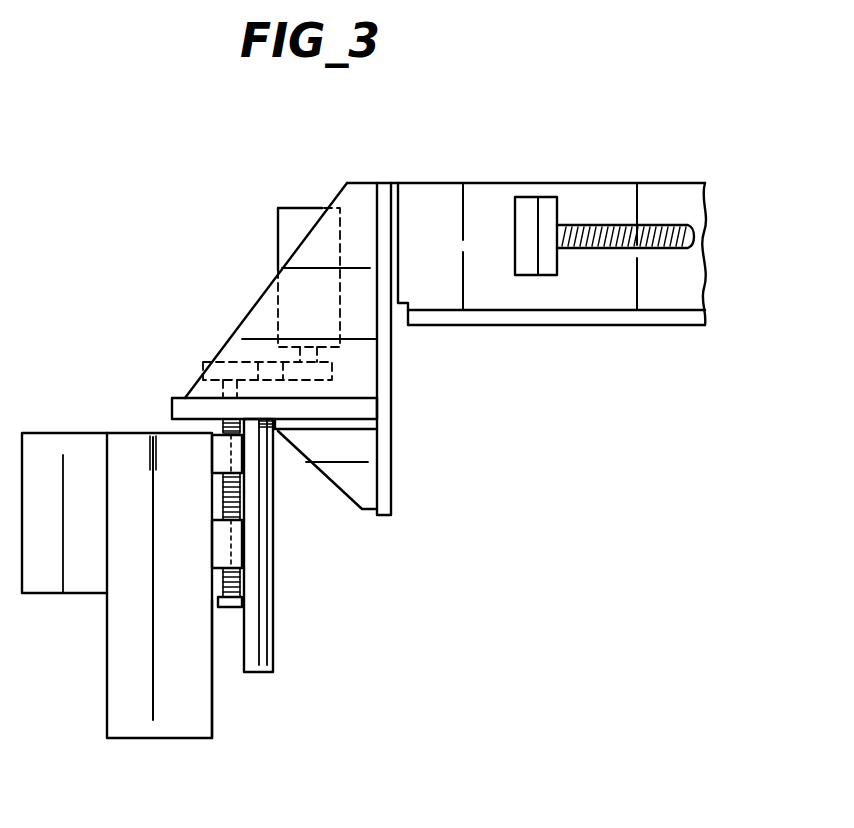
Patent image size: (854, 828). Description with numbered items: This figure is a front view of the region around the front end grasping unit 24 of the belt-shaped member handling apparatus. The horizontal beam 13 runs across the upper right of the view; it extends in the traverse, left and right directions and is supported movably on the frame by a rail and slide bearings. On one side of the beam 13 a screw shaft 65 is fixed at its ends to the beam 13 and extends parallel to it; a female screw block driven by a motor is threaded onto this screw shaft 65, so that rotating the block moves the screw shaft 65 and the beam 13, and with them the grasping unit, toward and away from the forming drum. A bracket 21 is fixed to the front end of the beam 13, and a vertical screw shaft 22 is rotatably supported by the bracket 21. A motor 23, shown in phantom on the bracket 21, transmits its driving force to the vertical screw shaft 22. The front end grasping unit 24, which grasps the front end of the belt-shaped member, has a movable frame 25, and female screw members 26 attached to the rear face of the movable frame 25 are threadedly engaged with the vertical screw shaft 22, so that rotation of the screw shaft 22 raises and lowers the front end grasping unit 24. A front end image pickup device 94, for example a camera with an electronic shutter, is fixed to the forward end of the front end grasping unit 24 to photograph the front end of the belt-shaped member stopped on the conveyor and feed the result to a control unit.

The horizontal beam 13 is at (480, 185).
The screw shaft 65 is at (663, 250).
The bracket 21 is at (256, 318).
The motor 23 is at (284, 222).
The vertical screw shaft 22 is at (240, 497).
The female screw members 26 is at (219, 455).
The movable frame 25 is at (214, 685).
The front end grasping unit 24 is at (214, 722).
The front end image pickup device 94 is at (47, 582).